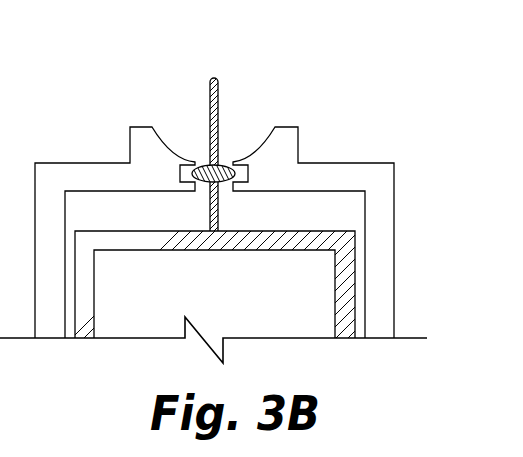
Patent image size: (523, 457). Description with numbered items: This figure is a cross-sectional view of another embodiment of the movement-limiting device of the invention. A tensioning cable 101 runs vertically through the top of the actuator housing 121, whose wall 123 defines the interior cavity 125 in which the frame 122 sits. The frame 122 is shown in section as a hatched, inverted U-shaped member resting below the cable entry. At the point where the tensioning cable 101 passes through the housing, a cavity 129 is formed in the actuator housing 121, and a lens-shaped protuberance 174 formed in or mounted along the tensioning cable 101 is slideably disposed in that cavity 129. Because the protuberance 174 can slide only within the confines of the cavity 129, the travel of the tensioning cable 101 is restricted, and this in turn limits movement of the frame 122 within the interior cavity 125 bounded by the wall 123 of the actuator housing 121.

The tensioning cable 101 is at (209, 105).
The actuator housing 121 is at (355, 175).
The frame 122 is at (342, 262).
The wall 123 is at (387, 190).
The interior cavity 125 is at (300, 207).
The cavity 129 is at (250, 158).
The seal 174 is at (220, 167).